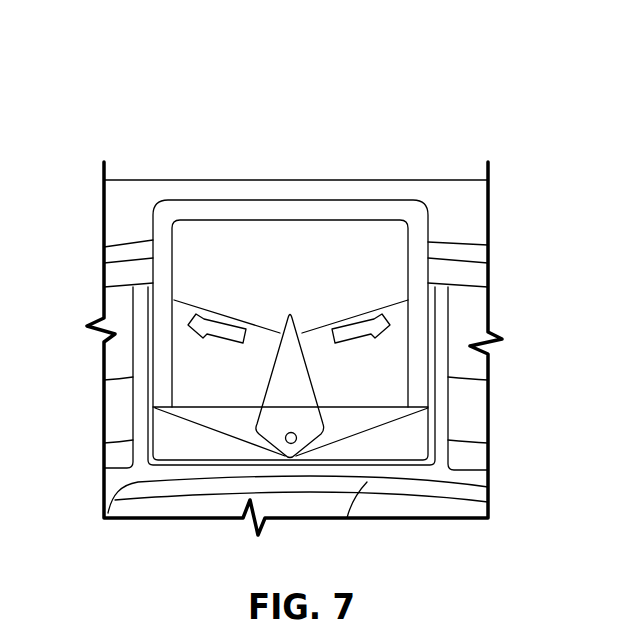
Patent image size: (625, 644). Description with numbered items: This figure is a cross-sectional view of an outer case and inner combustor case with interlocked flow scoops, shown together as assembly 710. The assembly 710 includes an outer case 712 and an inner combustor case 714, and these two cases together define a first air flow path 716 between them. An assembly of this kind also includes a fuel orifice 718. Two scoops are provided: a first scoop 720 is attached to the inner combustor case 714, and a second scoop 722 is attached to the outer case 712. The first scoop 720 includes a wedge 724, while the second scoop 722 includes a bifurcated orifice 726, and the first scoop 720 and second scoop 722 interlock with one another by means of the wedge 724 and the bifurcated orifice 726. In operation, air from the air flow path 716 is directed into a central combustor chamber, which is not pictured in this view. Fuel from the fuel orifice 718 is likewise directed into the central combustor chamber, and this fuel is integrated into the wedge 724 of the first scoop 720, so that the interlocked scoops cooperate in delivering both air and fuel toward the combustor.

The assembly 710 is at (140, 66).
The outer case 712 is at (462, 240).
The inner combustor case 714 is at (455, 477).
The first air flow path 716 is at (226, 322).
The fuel orifice 718 is at (286, 441).
The first scoop 720 is at (442, 428).
The second scoop 722 is at (348, 210).
The wedge 724 is at (296, 360).
The bifurcated orifice 726 is at (262, 392).